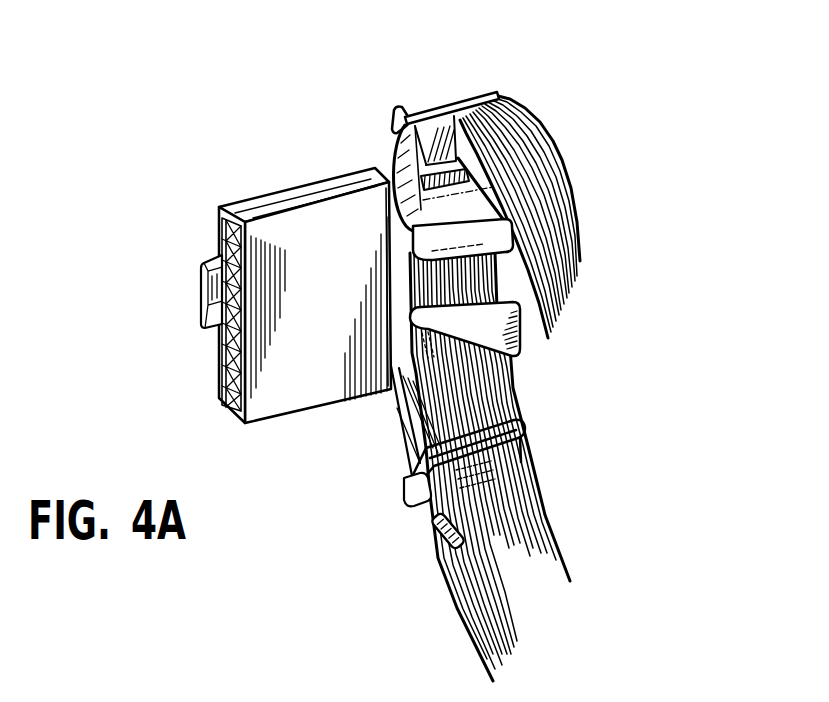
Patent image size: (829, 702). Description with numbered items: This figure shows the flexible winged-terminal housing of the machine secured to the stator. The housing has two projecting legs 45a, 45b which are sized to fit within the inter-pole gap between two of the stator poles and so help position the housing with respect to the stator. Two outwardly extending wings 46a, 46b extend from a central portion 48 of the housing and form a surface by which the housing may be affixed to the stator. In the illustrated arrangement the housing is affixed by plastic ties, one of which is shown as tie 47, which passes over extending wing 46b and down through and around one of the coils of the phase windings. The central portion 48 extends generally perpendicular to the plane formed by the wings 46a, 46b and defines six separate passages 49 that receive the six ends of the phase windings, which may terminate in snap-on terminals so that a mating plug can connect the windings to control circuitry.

The projecting leg 45a is at (380, 158).
The projecting leg 45b is at (445, 345).
The outwardly extending wing 46a is at (424, 112).
The outwardly extending wing 46b is at (423, 530).
The plastic tie 47 is at (400, 487).
The central portion 48 is at (236, 190).
The connector terminal cavities 49 is at (210, 372).